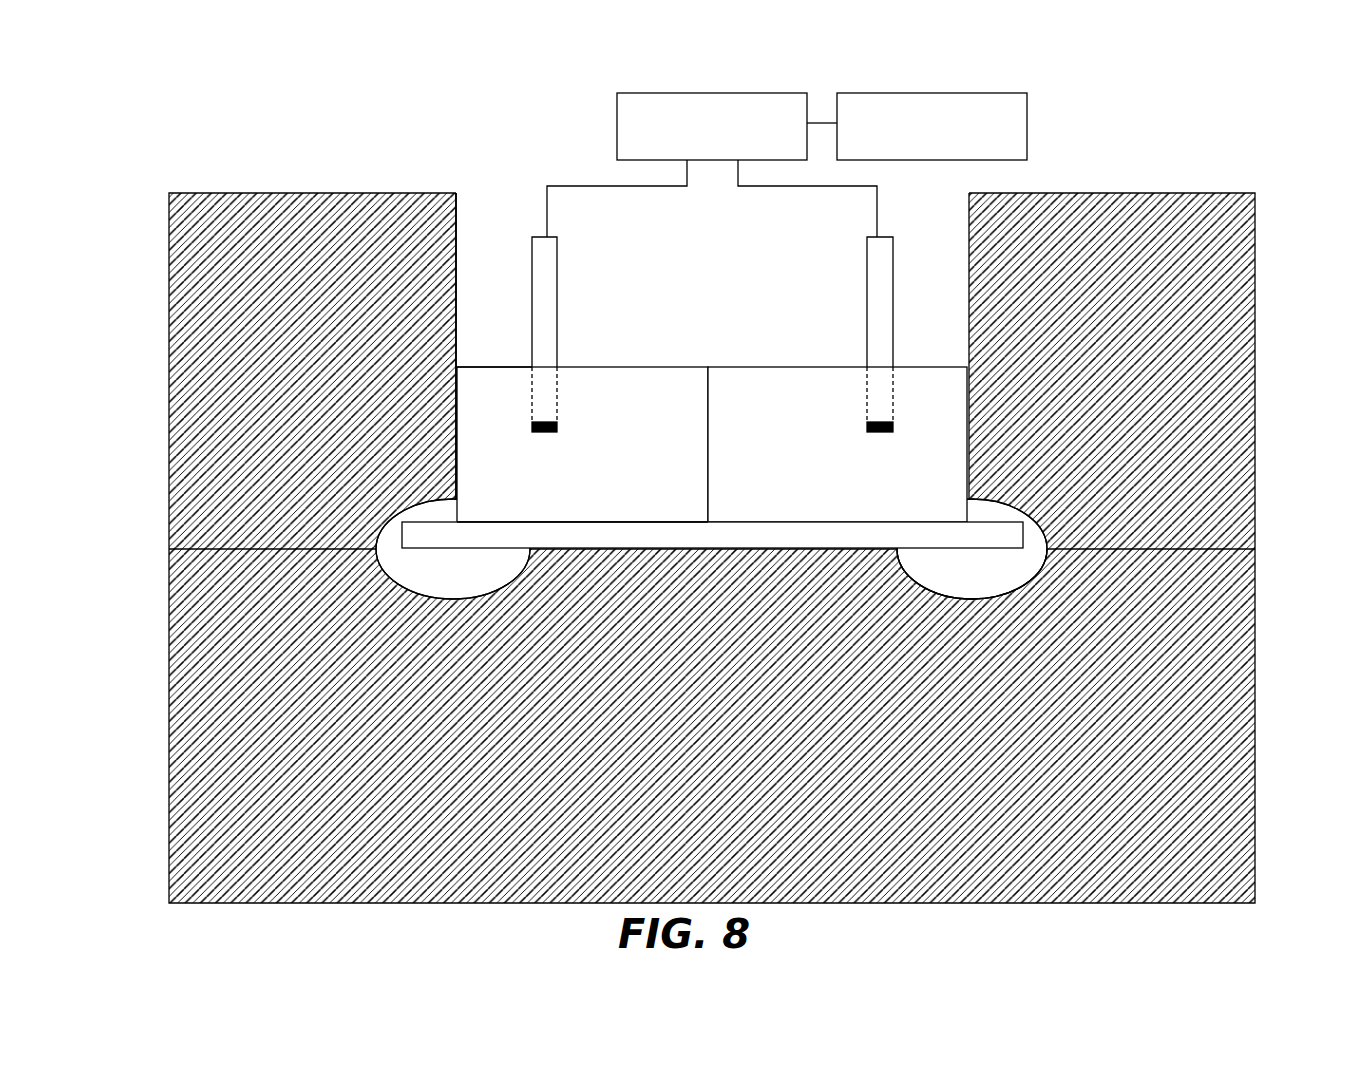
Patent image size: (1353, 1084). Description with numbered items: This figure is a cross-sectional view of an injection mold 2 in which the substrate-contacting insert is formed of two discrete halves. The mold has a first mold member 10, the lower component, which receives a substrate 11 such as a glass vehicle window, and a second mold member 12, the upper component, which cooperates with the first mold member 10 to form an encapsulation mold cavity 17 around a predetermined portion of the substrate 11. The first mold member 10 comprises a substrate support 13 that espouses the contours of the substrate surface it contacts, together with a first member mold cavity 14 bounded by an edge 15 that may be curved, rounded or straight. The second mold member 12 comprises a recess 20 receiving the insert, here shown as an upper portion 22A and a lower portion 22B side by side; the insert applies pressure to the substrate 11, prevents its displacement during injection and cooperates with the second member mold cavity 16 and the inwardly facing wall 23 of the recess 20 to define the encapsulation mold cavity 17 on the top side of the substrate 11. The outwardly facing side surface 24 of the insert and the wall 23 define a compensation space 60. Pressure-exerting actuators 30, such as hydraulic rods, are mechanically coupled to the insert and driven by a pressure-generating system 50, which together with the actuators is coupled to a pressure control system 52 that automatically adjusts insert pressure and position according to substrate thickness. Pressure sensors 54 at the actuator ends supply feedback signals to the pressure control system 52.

The injection mold 2 is at (251, 135).
The first mold member 10 is at (169, 712).
The substrate 11 is at (700, 546).
The second mold member 12 is at (185, 292).
The substrate support 13 is at (808, 545).
The first member mold cavity 14 is at (388, 586).
The edge 15 is at (897, 563).
The second member mold cavity 16 is at (410, 514).
The encapsulation mold cavity 17 is at (465, 582).
The recess 20 is at (699, 327).
The upper portion 22A is at (572, 481).
The lower portion 22B is at (828, 487).
The inwardly facing wall 23 is at (456, 247).
The outwardly facing side surface 24 is at (457, 508).
The pressure-exerting actuators 30 is at (558, 300).
The pressure-generating system 50 is at (700, 136).
The pressure control system 52 is at (920, 136).
The pressure sensors 54 is at (560, 428).
The compensation space 60 is at (457, 367).